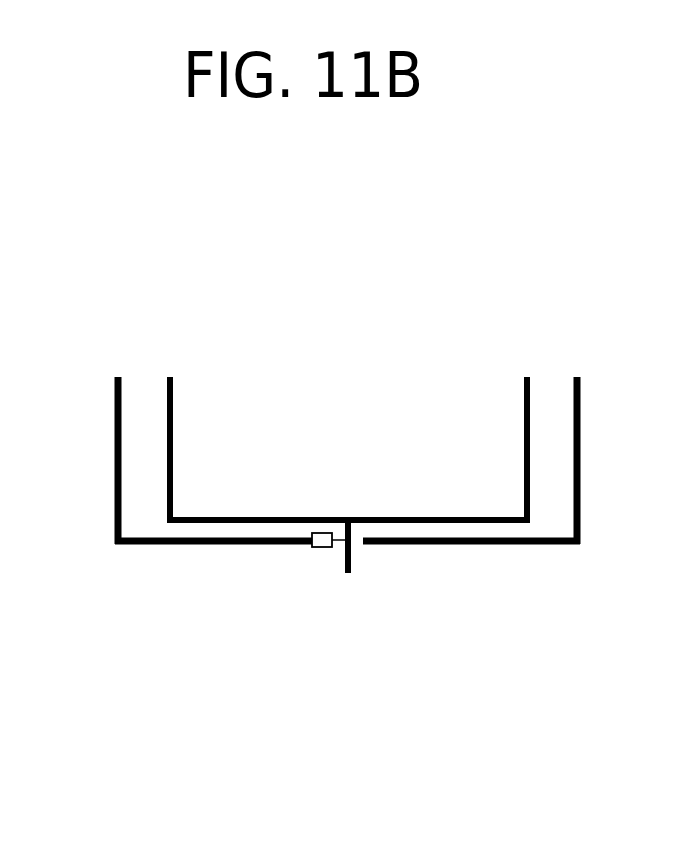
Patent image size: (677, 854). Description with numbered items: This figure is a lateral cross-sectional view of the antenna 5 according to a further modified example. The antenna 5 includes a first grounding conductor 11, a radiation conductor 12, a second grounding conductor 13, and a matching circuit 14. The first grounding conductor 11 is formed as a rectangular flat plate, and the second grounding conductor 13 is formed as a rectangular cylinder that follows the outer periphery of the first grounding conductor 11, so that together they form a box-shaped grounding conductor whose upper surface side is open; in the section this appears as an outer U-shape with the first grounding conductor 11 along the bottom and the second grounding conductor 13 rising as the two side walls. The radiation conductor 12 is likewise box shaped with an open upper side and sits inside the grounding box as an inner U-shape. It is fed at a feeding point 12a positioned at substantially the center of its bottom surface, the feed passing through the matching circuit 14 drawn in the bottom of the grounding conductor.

The antenna 5 is at (477, 677).
The first grounding conductor 11 is at (500, 545).
The radiation conductor 12 is at (173, 438).
The feeding point 12a is at (348, 518).
The second grounding conductor 13 is at (116, 470).
The matching circuit 14 is at (320, 548).